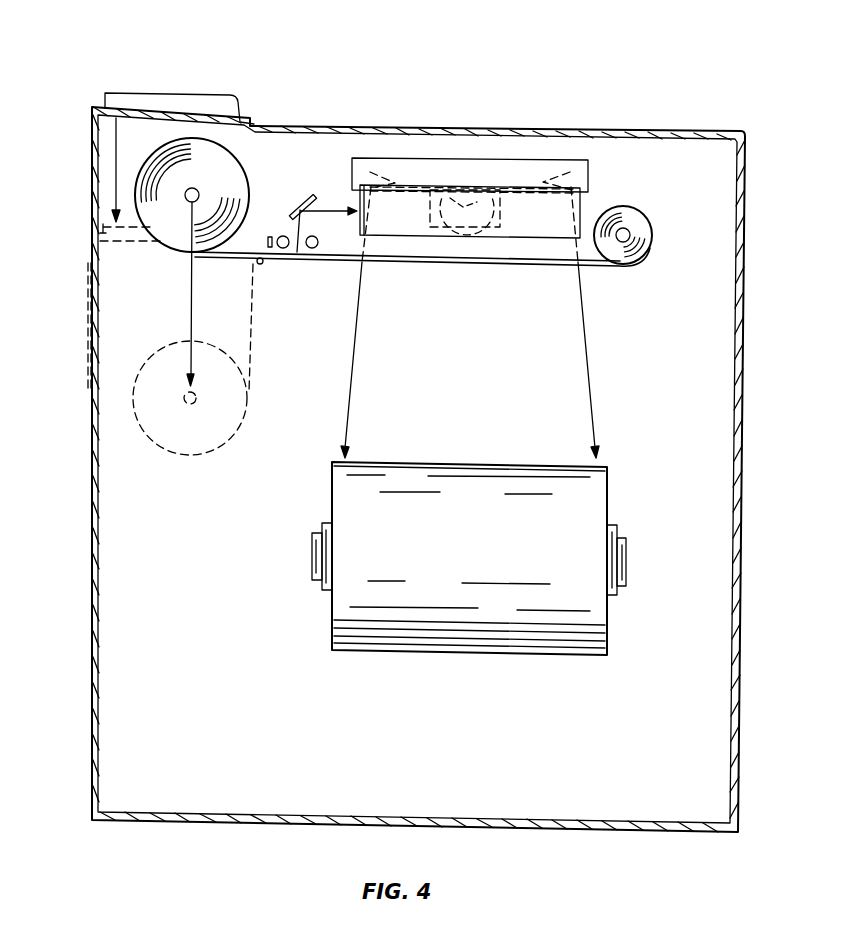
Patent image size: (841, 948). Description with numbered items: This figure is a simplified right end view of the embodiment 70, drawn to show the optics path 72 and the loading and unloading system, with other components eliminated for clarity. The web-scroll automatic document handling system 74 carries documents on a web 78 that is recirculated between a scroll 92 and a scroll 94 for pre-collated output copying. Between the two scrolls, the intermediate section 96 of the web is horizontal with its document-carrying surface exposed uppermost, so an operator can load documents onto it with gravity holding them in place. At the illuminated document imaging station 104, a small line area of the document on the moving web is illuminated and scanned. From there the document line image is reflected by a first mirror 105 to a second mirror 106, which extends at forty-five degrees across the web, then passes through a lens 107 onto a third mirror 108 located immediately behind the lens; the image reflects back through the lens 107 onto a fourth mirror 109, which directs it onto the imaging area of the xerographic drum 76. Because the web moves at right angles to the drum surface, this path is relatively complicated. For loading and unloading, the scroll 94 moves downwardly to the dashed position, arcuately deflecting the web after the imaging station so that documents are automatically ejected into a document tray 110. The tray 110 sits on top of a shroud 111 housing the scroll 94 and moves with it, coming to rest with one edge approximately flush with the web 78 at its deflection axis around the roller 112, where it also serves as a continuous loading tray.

The embodiment 70 is at (405, 62).
The optics path 72 is at (587, 410).
The web-scroll automatic document handling system 74 is at (308, 140).
The xerographic drum 76 is at (607, 494).
The web 78 is at (428, 262).
The scroll 92 is at (645, 215).
The scroll 94 is at (237, 152).
The intermediate section 96 is at (308, 262).
The illuminated document imaging station 104 is at (282, 229).
The first mirror 105 is at (308, 194).
The second mirror 106 is at (582, 212).
The lens 107 is at (452, 198).
The third mirror 108 is at (507, 222).
The fourth mirror 109 is at (490, 193).
The document tray 110 is at (148, 92).
The shroud 111 is at (92, 148).
The roller 112 is at (258, 266).